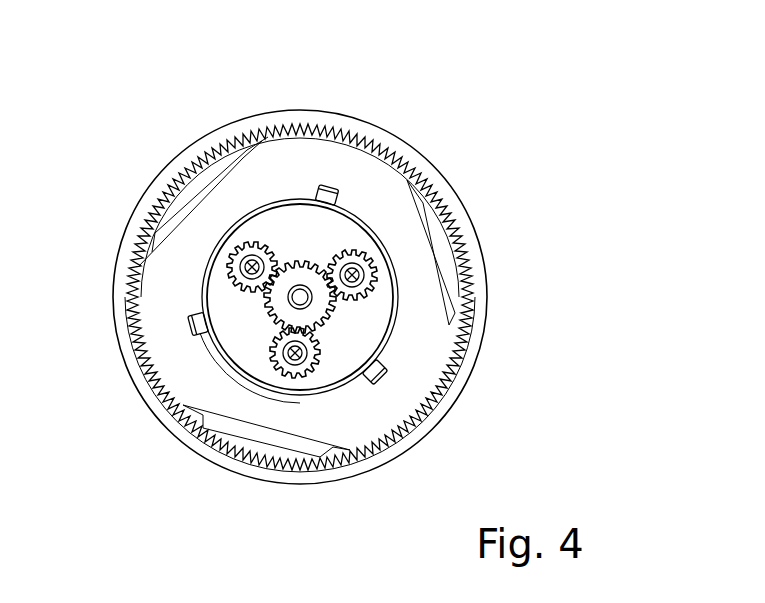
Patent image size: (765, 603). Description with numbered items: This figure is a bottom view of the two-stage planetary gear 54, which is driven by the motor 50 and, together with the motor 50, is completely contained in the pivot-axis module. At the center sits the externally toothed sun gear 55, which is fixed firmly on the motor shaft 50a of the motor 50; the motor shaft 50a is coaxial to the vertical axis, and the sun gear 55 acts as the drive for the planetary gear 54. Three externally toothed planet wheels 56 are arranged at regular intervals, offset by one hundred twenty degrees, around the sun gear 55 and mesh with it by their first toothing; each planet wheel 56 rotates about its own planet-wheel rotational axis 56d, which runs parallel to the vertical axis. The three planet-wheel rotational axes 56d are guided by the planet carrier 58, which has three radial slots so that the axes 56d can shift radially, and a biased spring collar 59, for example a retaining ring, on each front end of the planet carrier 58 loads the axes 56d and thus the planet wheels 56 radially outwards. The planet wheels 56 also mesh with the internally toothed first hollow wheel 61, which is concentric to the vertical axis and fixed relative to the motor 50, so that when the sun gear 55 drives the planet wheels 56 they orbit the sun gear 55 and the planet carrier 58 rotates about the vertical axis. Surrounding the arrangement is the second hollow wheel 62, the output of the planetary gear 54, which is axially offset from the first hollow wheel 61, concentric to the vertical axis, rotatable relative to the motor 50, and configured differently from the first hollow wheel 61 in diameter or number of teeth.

The planetary gear 54 is at (530, 178).
The second hollow wheel 62 is at (137, 230).
The first hollow wheel 61 is at (165, 188).
The planet carrier 58 is at (217, 227).
The spring collar 59 is at (387, 272).
The planet wheel 56 is at (289, 227).
The planet-wheel rotational axis 56d is at (373, 372).
The motor 50 is at (261, 228).
The sun gear 55 is at (302, 280).
The motor shaft 50a is at (332, 268).